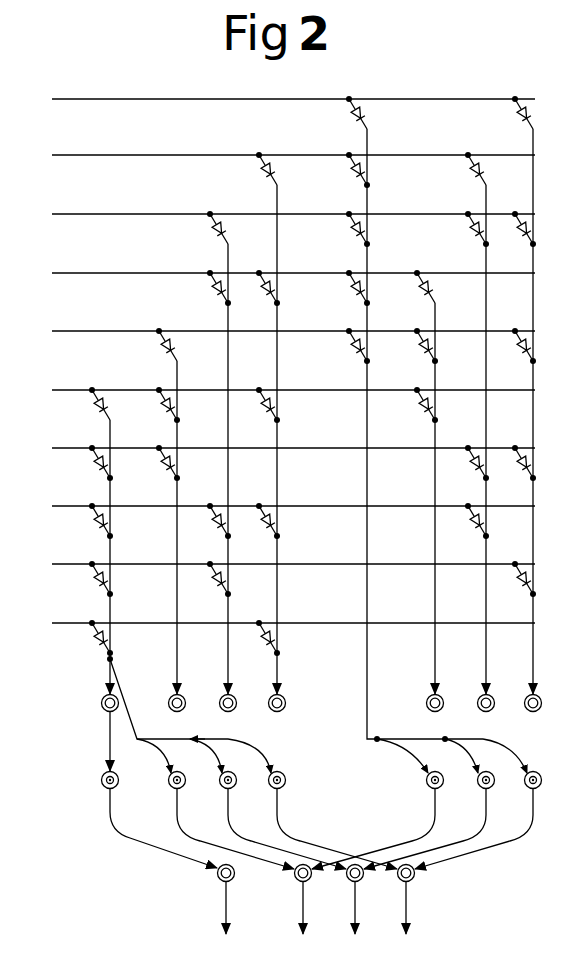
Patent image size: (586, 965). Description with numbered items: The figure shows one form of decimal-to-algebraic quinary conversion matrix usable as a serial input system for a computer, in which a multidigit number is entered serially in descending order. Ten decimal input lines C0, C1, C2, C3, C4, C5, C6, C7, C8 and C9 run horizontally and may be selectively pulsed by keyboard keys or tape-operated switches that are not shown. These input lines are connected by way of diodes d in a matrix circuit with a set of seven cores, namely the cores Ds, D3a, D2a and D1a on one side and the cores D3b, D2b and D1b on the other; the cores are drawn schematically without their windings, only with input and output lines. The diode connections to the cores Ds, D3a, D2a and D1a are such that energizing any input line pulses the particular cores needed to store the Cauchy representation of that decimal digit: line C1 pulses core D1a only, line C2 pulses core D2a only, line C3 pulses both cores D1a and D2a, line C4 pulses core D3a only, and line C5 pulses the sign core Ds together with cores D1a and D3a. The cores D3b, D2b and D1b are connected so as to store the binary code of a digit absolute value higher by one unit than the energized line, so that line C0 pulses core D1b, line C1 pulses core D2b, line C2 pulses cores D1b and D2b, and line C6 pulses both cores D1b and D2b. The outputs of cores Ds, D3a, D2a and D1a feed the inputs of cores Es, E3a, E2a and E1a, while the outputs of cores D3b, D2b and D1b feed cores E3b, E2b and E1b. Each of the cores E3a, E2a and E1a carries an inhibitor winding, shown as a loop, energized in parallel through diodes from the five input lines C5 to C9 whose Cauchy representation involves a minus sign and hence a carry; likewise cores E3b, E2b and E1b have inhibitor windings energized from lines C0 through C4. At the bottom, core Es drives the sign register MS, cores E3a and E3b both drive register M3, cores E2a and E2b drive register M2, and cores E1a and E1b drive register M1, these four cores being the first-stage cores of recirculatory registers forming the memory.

The decimal input line C0 is at (274, 99).
The decimal input line C1 is at (274, 155).
The decimal input line C2 is at (274, 214).
The decimal input line C3 is at (274, 273).
The decimal input line C4 is at (274, 331).
The decimal input line C5 is at (274, 390).
The decimal input line C6 is at (274, 448).
The decimal input line C7 is at (274, 506).
The decimal input line C8 is at (274, 564).
The decimal input line C9 is at (274, 623).
The diode d is at (345, 108).
The sign core Ds is at (101, 704).
The sign output core Es is at (101, 780).
The core D3a is at (168, 696).
The core D2a is at (220, 696).
The core D1a is at (270, 696).
The core D3b is at (427, 696).
The core D2b is at (478, 696).
The core D1b is at (526, 696).
The core E3a is at (170, 787).
The core E2a is at (221, 787).
The core E1a is at (270, 787).
The core E3b is at (428, 787).
The core E2b is at (479, 787).
The core E1b is at (526, 787).
The sign register core MS is at (225, 915).
The register core M3 is at (304, 915).
The register core M2 is at (356, 915).
The register core M1 is at (408, 915).